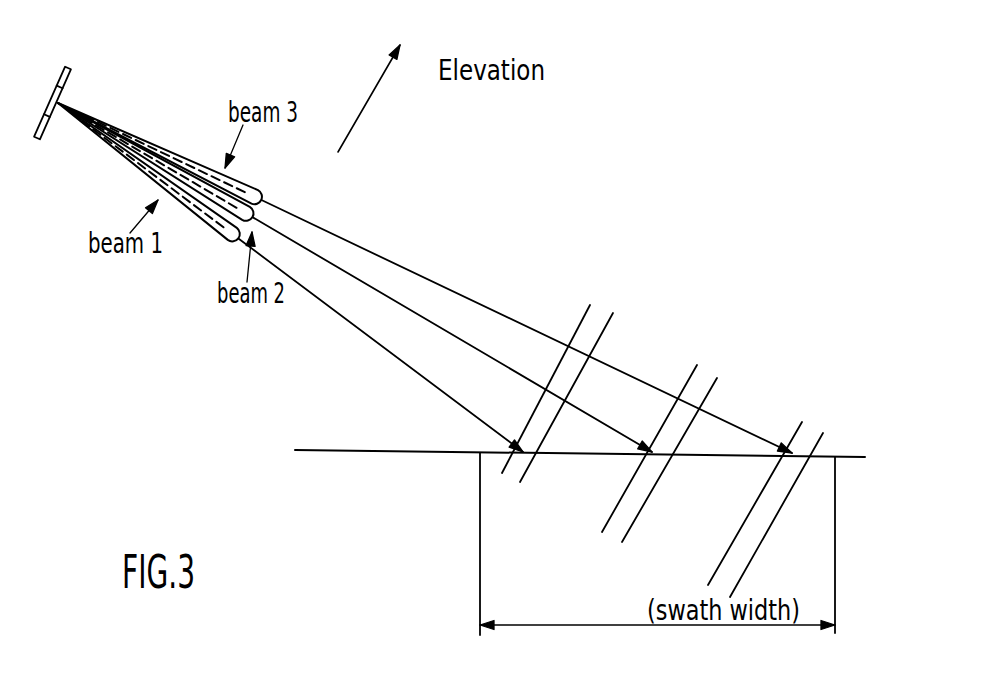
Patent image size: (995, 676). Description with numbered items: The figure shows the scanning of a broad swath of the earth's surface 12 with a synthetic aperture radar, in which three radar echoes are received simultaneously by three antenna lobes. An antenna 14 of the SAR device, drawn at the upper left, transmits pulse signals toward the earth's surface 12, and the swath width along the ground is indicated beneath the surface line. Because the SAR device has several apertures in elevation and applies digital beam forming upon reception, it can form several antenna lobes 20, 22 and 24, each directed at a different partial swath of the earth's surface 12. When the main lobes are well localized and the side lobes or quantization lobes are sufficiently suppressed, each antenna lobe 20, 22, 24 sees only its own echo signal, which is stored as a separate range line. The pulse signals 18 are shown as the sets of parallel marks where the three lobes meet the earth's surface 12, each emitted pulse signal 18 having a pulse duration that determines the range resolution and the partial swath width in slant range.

The earth's surface 12 is at (358, 450).
The antenna 14 is at (63, 86).
The pulse signal 18 is at (818, 420).
The antenna lobe 20 is at (347, 317).
The antenna lobe 22 is at (427, 317).
The antenna lobe 24 is at (505, 313).